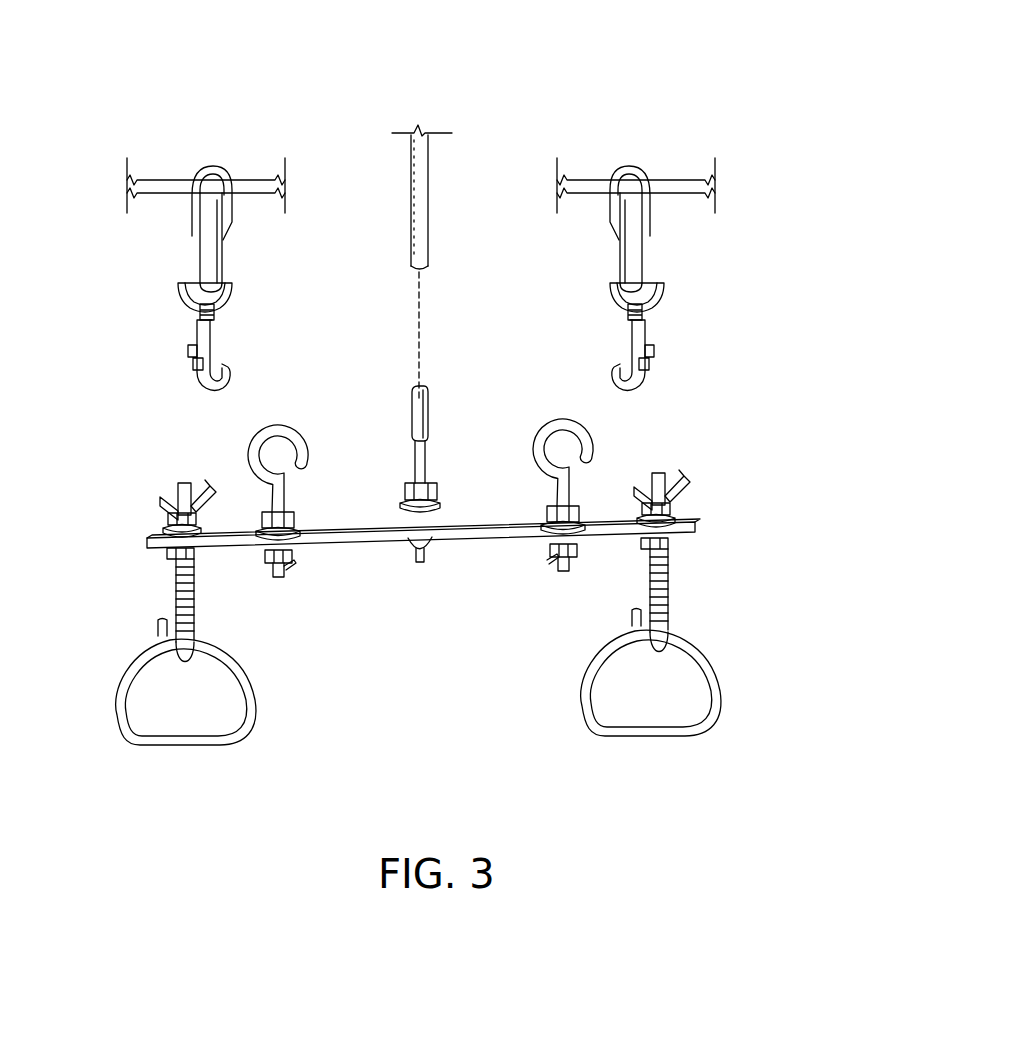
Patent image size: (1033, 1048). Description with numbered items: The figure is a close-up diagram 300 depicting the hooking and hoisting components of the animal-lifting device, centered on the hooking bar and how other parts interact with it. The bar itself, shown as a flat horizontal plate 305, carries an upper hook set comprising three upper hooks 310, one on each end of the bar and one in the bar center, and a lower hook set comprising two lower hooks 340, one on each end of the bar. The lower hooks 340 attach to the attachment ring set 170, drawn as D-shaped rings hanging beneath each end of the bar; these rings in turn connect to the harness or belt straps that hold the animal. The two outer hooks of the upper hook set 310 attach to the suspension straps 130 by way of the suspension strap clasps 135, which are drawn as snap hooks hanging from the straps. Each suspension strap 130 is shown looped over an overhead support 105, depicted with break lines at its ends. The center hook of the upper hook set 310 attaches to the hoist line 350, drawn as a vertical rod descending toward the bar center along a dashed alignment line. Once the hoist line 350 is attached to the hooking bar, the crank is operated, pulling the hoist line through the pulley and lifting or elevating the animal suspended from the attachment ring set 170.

The diagram 300 is at (722, 60).
The overhead beam 105 is at (238, 190).
The suspension straps 130 is at (197, 240).
The suspension strap clasps 135 is at (192, 385).
The hoist line 350 is at (429, 240).
The bar 305 is at (478, 538).
The upper hooks 310 is at (282, 428).
The lower hooks 340 is at (176, 590).
The attachment ring set 170 is at (183, 746).